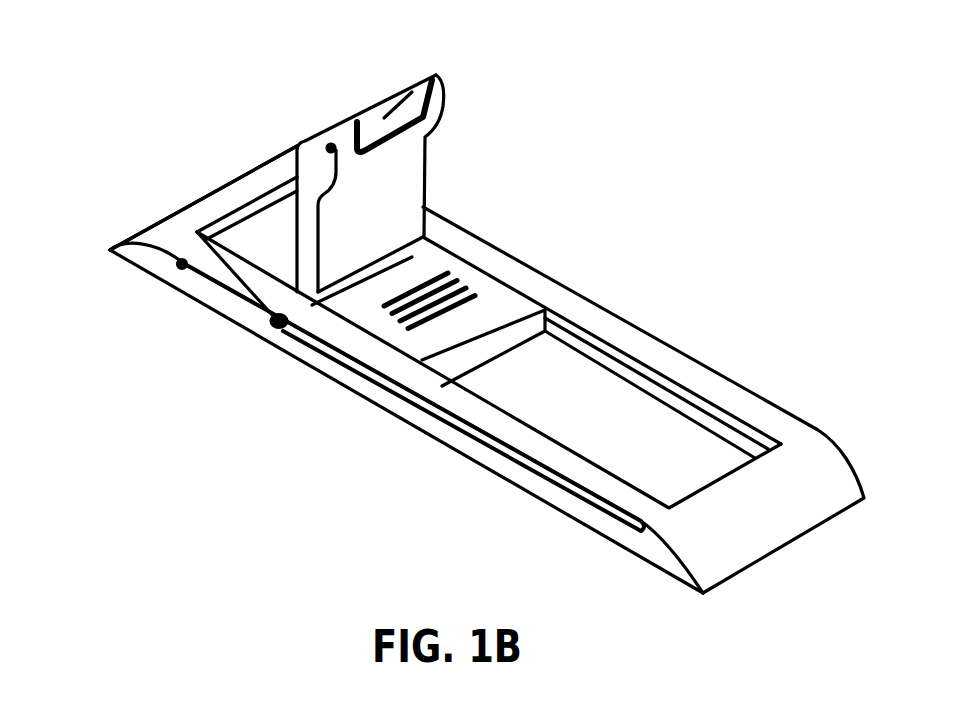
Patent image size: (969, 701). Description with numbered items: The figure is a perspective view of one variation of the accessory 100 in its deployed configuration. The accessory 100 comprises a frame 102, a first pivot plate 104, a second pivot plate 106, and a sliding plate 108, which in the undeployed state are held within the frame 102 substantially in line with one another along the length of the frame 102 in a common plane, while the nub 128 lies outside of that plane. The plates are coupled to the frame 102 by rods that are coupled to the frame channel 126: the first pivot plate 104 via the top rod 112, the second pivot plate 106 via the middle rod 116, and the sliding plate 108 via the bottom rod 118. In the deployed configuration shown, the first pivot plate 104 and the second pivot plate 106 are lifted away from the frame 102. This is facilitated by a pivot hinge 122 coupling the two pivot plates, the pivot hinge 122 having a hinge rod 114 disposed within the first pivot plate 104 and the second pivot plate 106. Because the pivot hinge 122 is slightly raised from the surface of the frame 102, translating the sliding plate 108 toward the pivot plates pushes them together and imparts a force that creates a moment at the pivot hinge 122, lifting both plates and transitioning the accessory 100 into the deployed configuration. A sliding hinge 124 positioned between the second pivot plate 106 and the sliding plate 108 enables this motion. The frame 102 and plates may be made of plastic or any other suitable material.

The accessory 100 is at (699, 199).
The frame 102 is at (211, 193).
The first pivot plate 104 is at (245, 233).
The second pivot plate 106 is at (393, 229).
The sliding plate 108 is at (490, 307).
The top rod 112 is at (178, 267).
The hinge rod 114 is at (330, 146).
The middle rod 116 is at (272, 323).
The bottom rod 118 is at (390, 395).
The pivot hinge 122 is at (434, 77).
The sliding hinge 124 is at (341, 289).
The frame channel 126 is at (514, 463).
The nub 128 is at (447, 116).